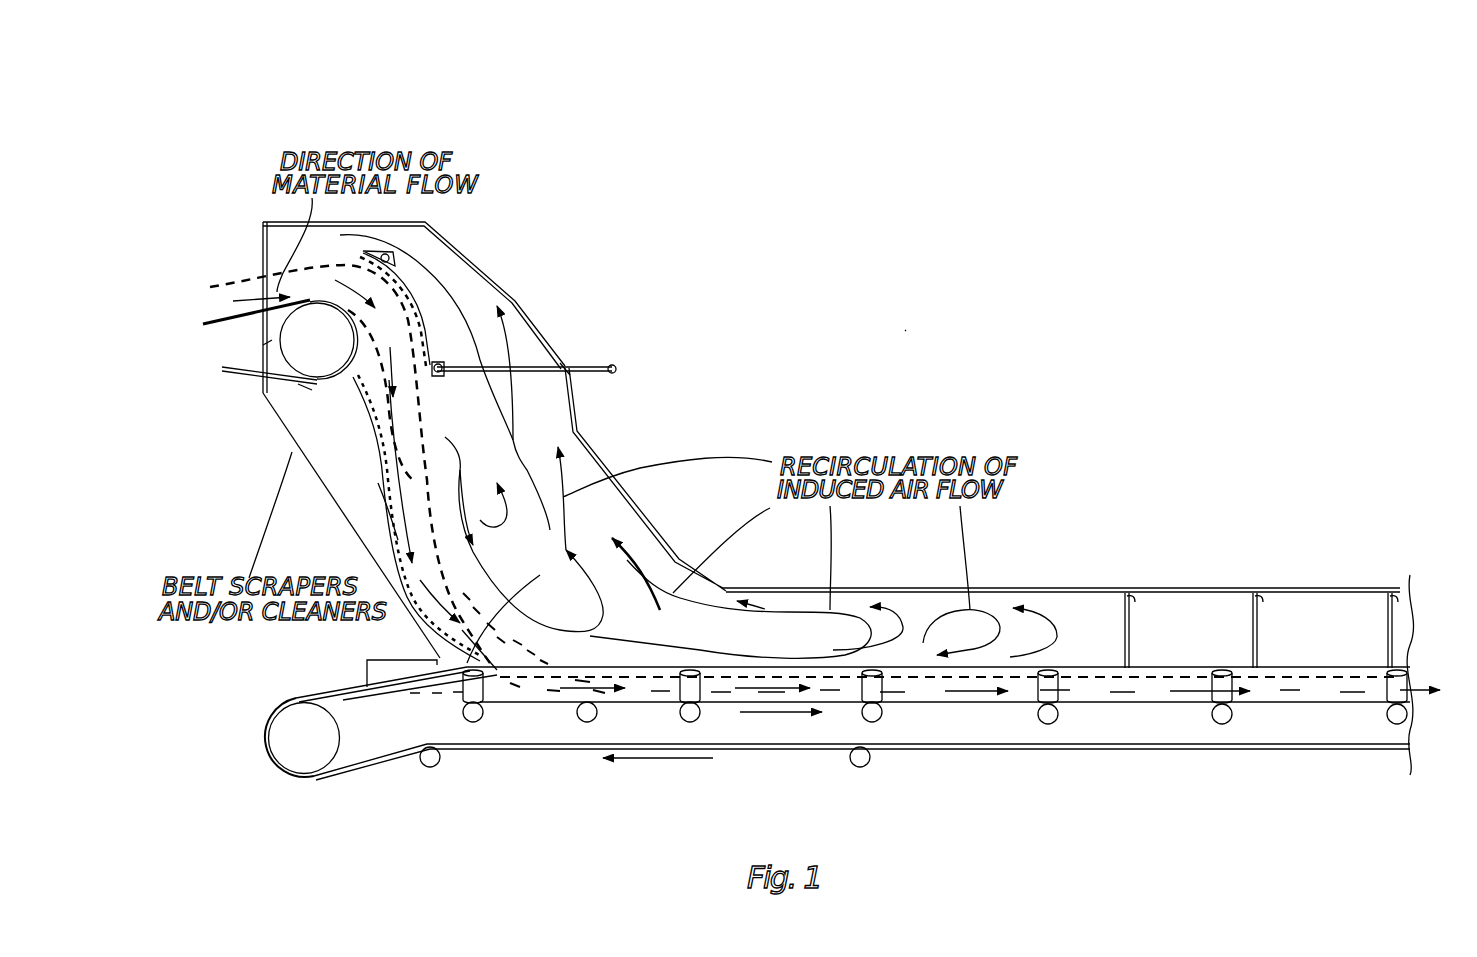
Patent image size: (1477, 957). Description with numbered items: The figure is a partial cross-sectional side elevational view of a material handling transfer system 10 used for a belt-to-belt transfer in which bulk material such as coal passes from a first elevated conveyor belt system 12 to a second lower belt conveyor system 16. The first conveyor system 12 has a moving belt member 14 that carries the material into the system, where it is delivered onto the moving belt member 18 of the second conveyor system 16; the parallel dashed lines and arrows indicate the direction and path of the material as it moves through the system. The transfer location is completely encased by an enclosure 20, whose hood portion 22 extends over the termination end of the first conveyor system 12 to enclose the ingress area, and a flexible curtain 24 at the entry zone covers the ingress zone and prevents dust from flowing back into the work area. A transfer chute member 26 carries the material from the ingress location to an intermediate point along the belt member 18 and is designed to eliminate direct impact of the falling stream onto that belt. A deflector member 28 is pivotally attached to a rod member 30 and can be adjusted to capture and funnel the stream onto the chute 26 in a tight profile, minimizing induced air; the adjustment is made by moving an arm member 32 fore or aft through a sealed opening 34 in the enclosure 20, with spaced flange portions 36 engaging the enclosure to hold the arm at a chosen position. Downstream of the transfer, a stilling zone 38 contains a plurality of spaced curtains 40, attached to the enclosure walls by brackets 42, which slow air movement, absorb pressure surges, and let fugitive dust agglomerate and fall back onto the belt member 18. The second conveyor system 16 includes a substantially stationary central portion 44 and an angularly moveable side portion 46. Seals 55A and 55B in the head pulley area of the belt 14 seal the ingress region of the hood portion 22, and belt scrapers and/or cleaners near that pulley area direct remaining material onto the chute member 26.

The material handling transfer system 10 is at (915, 325).
The first elevated conveyor belt system 12 is at (338, 380).
The moving belt member 14 is at (240, 375).
The second lower belt conveyor system 16 is at (306, 780).
The moving belt member 18 is at (322, 697).
The enclosure 20 is at (362, 545).
The hood portion 22 is at (405, 222).
The flexible curtain 24 is at (262, 245).
The transfer chute member 26 is at (378, 483).
The deflector member 28 is at (424, 303).
The rod member 30 is at (397, 253).
The arm member 32 is at (612, 366).
The sealed opening 34 is at (565, 366).
The spaced flange portions 36 is at (557, 374).
The stilling zone 38 is at (1190, 588).
The spaced curtains 40 is at (1128, 658).
The brackets 42 is at (1135, 600).
The stationary central portion 44 is at (690, 716).
The angularly moveable side portion 46 is at (478, 703).
The seal 55A is at (263, 344).
The seal 55B is at (305, 388).